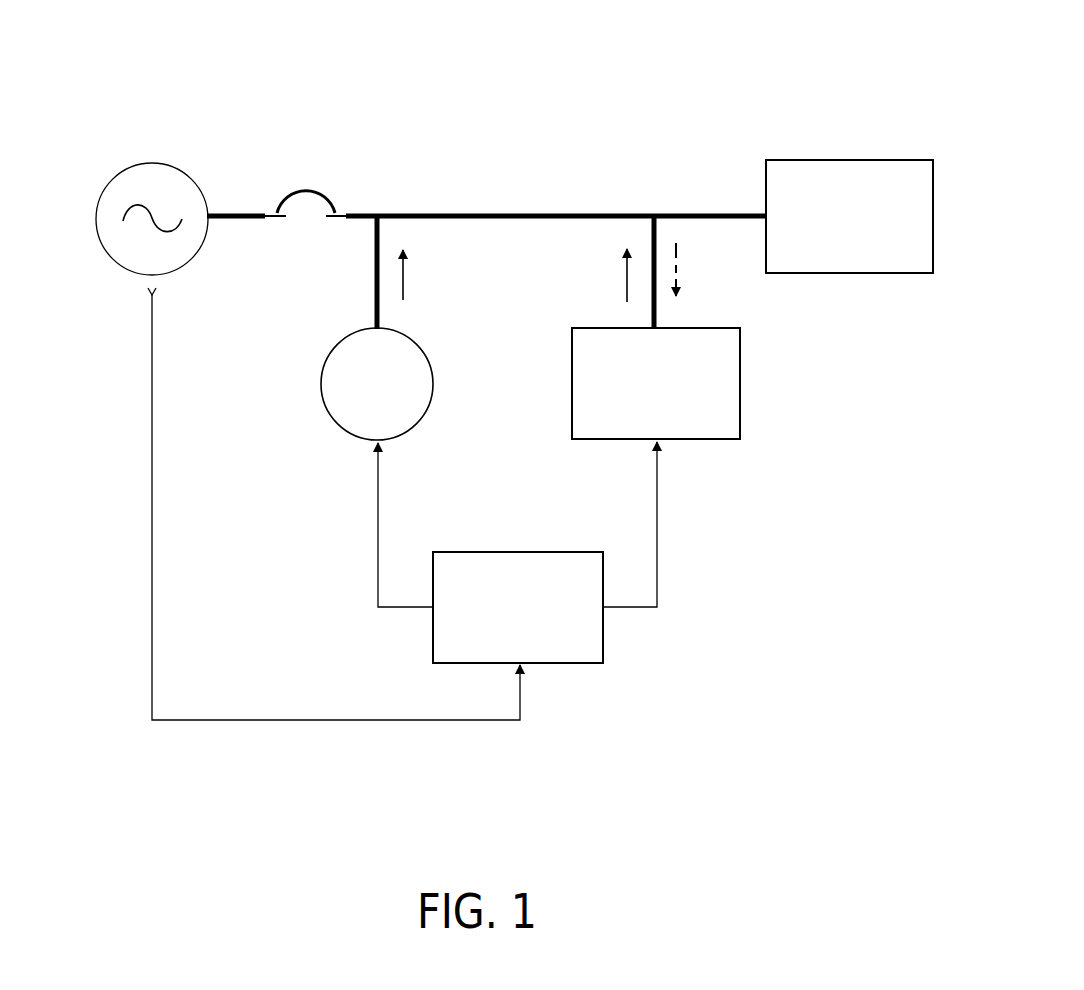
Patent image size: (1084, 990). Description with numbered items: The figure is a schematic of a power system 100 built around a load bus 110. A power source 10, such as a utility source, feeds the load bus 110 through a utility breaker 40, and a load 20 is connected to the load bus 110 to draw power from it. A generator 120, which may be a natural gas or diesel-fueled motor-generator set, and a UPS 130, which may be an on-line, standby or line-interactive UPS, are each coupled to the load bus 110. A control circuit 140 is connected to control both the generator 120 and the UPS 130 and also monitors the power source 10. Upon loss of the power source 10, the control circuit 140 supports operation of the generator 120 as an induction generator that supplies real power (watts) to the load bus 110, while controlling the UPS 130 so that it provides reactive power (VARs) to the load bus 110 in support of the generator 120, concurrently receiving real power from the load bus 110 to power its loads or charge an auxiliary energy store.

The power system 100 is at (548, 124).
The power source 10 is at (155, 163).
The utility breaker 40 is at (331, 168).
The load bus 110 is at (400, 213).
The load 20 is at (850, 160).
The generator 120 is at (435, 383).
The UPS 130 is at (740, 383).
The control circuit 140 is at (518, 552).